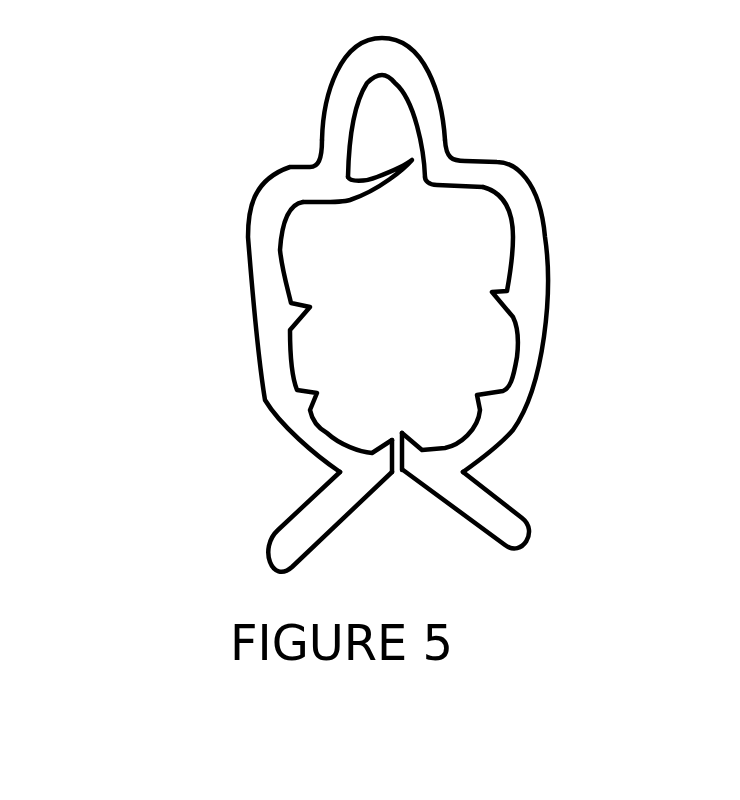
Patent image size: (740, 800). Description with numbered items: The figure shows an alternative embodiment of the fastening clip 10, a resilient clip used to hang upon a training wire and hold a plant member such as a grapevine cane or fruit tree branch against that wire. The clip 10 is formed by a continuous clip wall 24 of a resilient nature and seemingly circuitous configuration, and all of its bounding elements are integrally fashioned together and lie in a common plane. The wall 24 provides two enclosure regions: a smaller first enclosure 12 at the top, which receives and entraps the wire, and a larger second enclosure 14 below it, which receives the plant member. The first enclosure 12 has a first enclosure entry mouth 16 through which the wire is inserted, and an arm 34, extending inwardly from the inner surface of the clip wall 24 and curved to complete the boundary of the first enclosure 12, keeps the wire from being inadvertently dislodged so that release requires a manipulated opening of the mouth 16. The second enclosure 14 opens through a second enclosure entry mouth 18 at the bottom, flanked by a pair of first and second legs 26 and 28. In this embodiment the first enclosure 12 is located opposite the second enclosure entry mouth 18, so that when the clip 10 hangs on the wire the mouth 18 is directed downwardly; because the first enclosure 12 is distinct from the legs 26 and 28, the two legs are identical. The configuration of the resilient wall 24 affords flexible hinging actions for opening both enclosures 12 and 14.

The fastening clip 10 is at (243, 100).
The first enclosure 12 is at (390, 133).
The second enclosure 14 is at (495, 359).
The first enclosure entry mouth 16 is at (416, 184).
The second enclosure entry mouth 18 is at (401, 492).
The clip wall 24 is at (528, 250).
The first leg 26 is at (298, 543).
The second leg 28 is at (513, 523).
The arm 34 is at (368, 191).